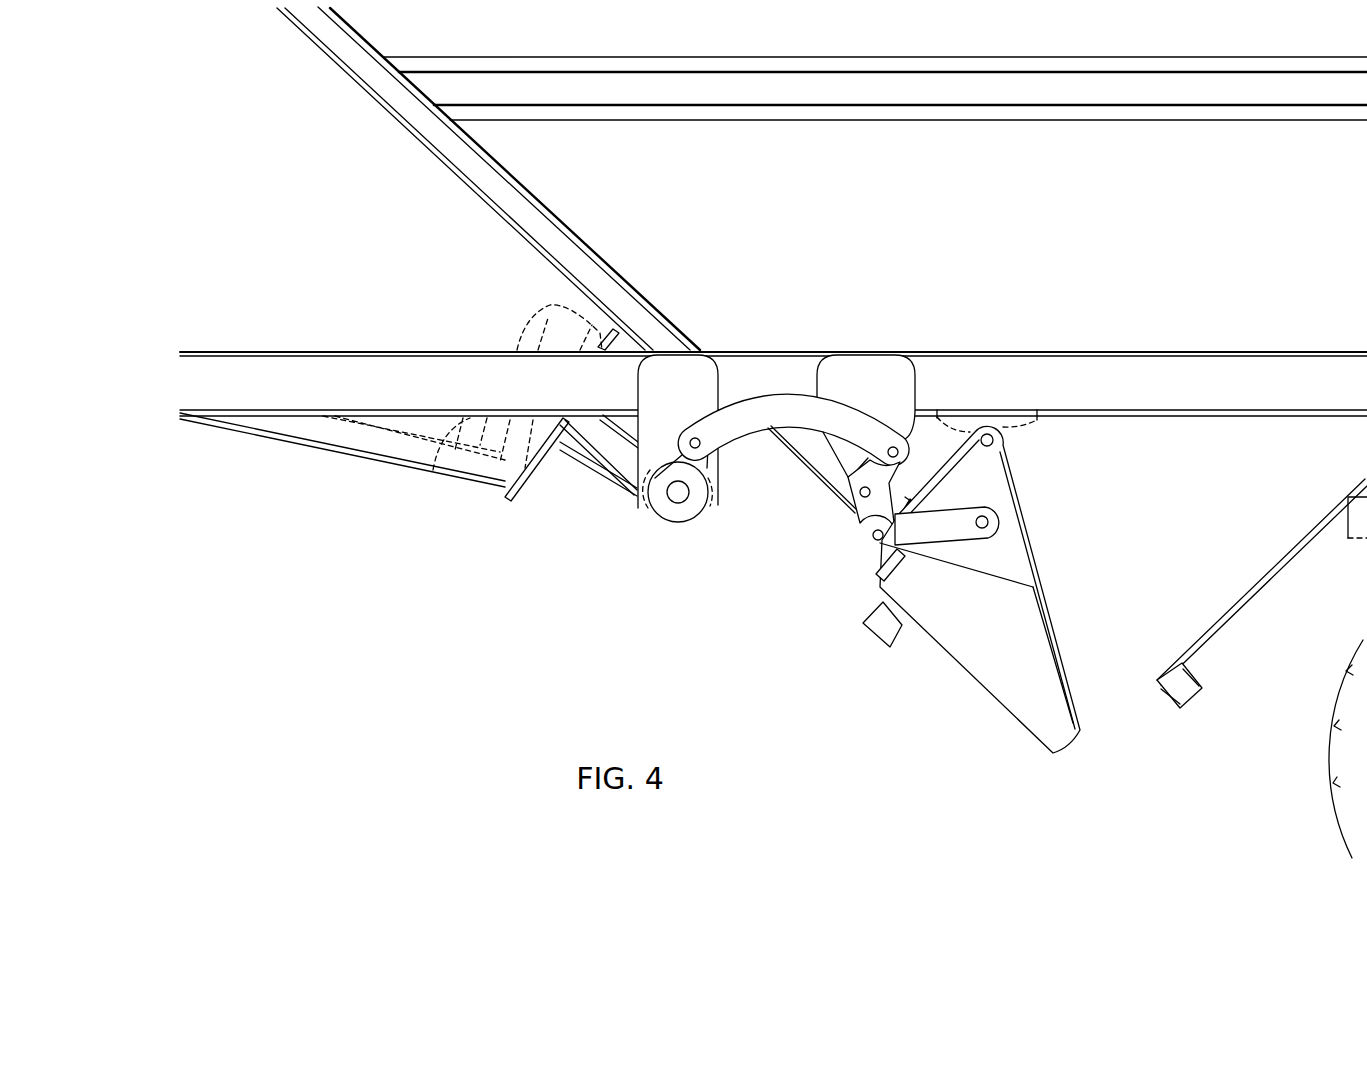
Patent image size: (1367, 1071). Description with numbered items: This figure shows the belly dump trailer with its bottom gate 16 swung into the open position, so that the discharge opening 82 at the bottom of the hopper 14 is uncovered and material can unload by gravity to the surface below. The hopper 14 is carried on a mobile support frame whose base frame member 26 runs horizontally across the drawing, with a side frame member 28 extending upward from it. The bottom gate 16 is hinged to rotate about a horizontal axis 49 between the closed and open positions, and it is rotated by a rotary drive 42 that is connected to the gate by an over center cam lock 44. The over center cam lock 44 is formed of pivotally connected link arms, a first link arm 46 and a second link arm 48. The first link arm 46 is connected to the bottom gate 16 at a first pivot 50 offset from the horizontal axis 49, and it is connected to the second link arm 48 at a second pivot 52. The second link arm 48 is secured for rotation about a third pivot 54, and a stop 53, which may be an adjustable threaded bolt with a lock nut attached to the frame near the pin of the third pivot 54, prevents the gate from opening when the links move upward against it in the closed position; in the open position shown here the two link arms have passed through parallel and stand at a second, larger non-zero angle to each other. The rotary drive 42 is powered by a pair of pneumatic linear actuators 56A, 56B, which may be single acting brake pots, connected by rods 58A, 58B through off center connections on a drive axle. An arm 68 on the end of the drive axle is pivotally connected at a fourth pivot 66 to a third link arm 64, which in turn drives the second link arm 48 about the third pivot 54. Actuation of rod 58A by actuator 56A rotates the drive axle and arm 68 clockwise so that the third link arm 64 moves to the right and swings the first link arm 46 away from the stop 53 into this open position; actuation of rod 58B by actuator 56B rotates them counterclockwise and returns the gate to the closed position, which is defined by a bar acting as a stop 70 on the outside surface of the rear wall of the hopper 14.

The hopper 14 is at (583, 177).
The bottom gate 16 is at (971, 560).
The base frame member 26 is at (1167, 373).
The side frame member 28 is at (563, 242).
The rotary drive 42 is at (480, 455).
The over center cam lock 44 is at (786, 508).
The first link arm 46 is at (927, 530).
The second link arm 48 is at (870, 510).
The horizontal axis 49 is at (989, 434).
The first pivot 50 is at (990, 522).
The second pivot 52 is at (878, 545).
The stop 53 is at (905, 502).
The third pivot 54 is at (858, 493).
The pneumatic linear actuator 56A is at (552, 327).
The pneumatic linear actuator 56B is at (428, 460).
The rod 58A is at (627, 432).
The rod 58B is at (590, 467).
The third link arm 64 is at (750, 425).
The fourth pivot 66 is at (689, 438).
The arm 68 is at (655, 514).
The stop 70 is at (1192, 690).
The discharge opening 82 is at (1115, 688).